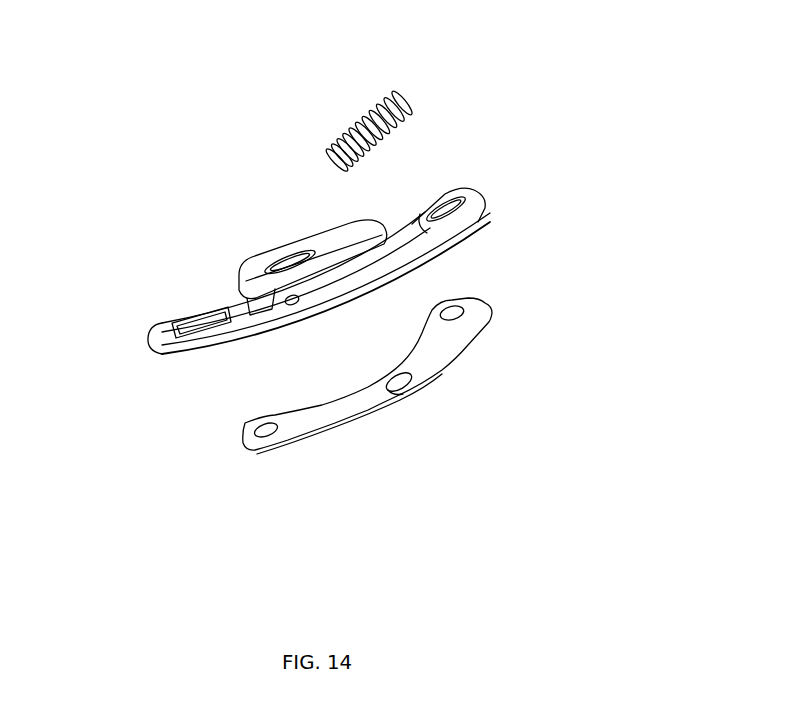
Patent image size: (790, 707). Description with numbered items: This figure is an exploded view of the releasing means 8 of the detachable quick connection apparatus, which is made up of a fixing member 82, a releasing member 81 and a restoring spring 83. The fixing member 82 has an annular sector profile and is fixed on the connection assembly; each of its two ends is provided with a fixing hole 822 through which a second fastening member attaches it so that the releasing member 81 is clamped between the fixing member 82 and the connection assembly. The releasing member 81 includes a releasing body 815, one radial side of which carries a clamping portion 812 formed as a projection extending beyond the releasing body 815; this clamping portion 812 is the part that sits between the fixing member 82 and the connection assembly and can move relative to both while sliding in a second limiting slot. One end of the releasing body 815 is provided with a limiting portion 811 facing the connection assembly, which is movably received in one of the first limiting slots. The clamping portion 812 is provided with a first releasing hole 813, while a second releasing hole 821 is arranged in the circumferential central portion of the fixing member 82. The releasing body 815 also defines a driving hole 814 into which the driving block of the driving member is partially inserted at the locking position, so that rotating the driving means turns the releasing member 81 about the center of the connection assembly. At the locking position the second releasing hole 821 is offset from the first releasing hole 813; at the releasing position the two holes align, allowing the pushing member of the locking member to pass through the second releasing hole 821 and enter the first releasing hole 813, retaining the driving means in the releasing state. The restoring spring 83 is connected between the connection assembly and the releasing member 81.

The releasing means 8 is at (198, 118).
The releasing member 81 is at (158, 326).
The limiting portion 811 is at (165, 357).
The clamping portion 812 is at (332, 240).
The first releasing hole 813 is at (244, 260).
The driving hole 814 is at (245, 308).
The releasing body 815 is at (240, 343).
The fixing member 82 is at (445, 345).
The second releasing hole 821 is at (406, 392).
The fixing hole 822 is at (268, 438).
The restoring spring 83 is at (405, 125).